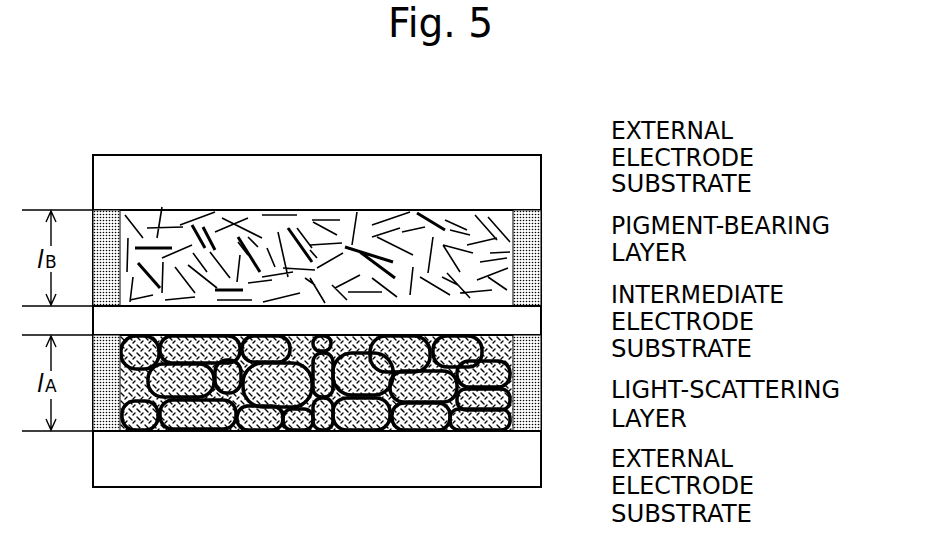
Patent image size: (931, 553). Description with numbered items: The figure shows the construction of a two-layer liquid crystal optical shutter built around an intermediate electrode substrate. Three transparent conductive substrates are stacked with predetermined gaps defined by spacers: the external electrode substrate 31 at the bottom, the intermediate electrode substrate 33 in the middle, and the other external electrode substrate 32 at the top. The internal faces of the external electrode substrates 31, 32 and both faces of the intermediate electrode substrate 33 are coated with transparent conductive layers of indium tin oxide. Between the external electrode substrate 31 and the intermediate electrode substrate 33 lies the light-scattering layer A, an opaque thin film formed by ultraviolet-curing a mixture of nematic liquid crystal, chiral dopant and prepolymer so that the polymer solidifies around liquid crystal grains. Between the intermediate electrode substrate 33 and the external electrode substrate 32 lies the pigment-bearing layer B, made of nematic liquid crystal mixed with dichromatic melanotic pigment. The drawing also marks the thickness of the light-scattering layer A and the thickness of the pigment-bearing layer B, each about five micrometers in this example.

The external electrode substrate 31 is at (530, 463).
The external electrode substrate 32 is at (528, 182).
The intermediate electrode substrate 33 is at (528, 325).
The light-scattering layer A is at (541, 395).
The pigment-bearing layer B is at (541, 256).